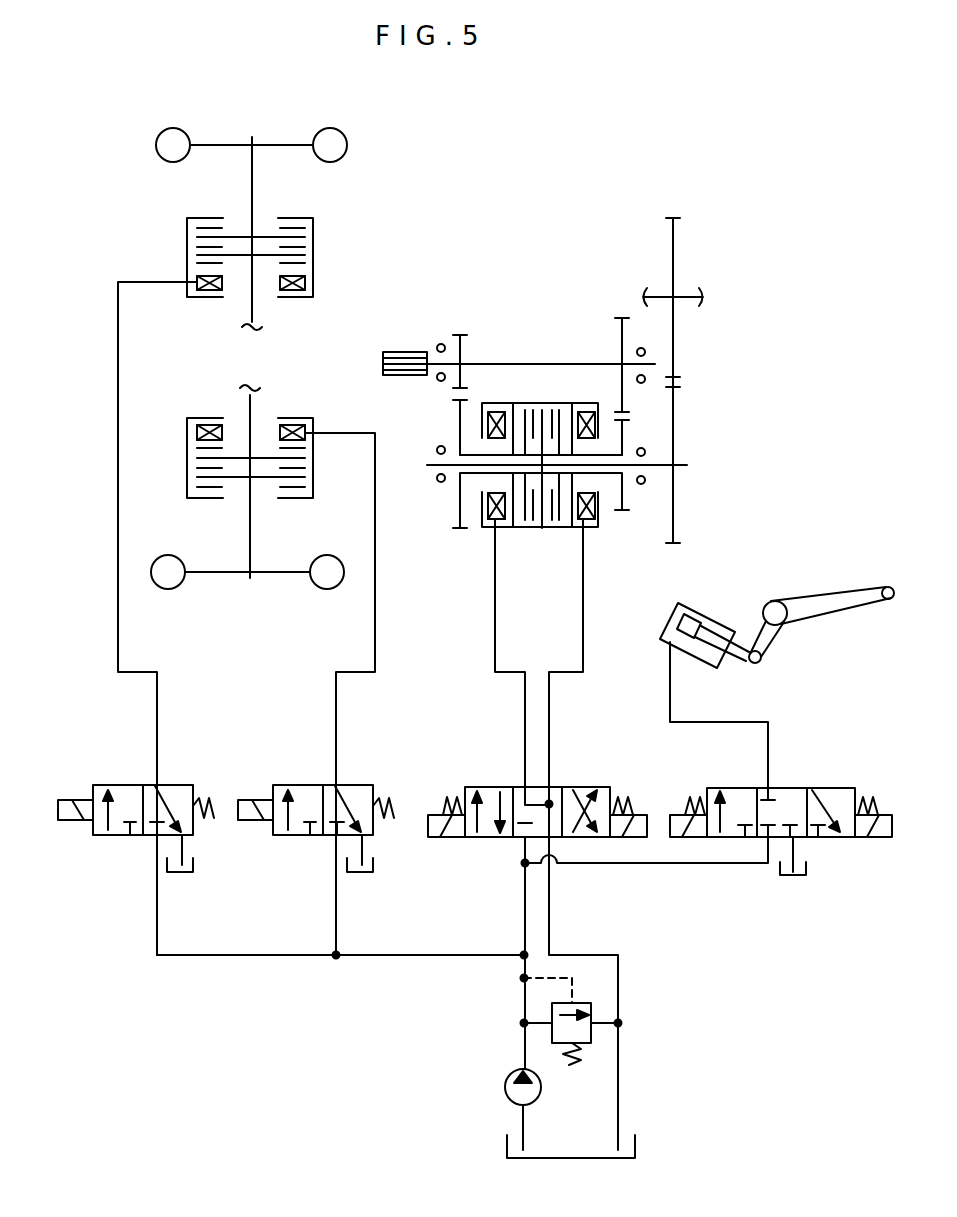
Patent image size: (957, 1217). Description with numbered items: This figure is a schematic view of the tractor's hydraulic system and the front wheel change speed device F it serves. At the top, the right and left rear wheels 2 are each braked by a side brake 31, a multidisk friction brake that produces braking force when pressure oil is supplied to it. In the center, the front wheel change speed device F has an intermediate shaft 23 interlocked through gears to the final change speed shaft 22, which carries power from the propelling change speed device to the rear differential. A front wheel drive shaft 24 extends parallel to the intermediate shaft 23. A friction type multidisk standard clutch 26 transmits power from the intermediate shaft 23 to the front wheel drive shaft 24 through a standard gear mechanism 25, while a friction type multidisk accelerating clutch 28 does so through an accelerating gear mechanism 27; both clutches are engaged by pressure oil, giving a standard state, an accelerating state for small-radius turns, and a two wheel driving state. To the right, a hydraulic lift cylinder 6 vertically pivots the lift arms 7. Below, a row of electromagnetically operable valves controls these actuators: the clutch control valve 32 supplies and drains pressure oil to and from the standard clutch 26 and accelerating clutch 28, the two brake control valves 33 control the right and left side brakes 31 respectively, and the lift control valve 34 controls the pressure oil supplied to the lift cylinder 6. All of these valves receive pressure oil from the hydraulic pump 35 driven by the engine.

The rear wheels 2 is at (225, 143).
The side brake 31 is at (187, 250).
The front wheel drive shaft 24 is at (527, 363).
The front wheel change speed device F is at (460, 312).
The accelerating gear mechanism 27 is at (440, 399).
The standard gear mechanism 25 is at (648, 414).
The intermediate shaft 23 is at (428, 468).
The final change speed shaft 22 is at (659, 297).
The accelerating clutch 28 is at (476, 531).
The standard clutch 26 is at (604, 531).
The hydraulic lift cylinder 6 is at (718, 620).
The lift arms 7 is at (830, 596).
The brake control valves 33 is at (133, 785).
The clutch control valve 32 is at (491, 787).
The lift control valve 34 is at (835, 788).
The hydraulic pump 35 is at (505, 1083).